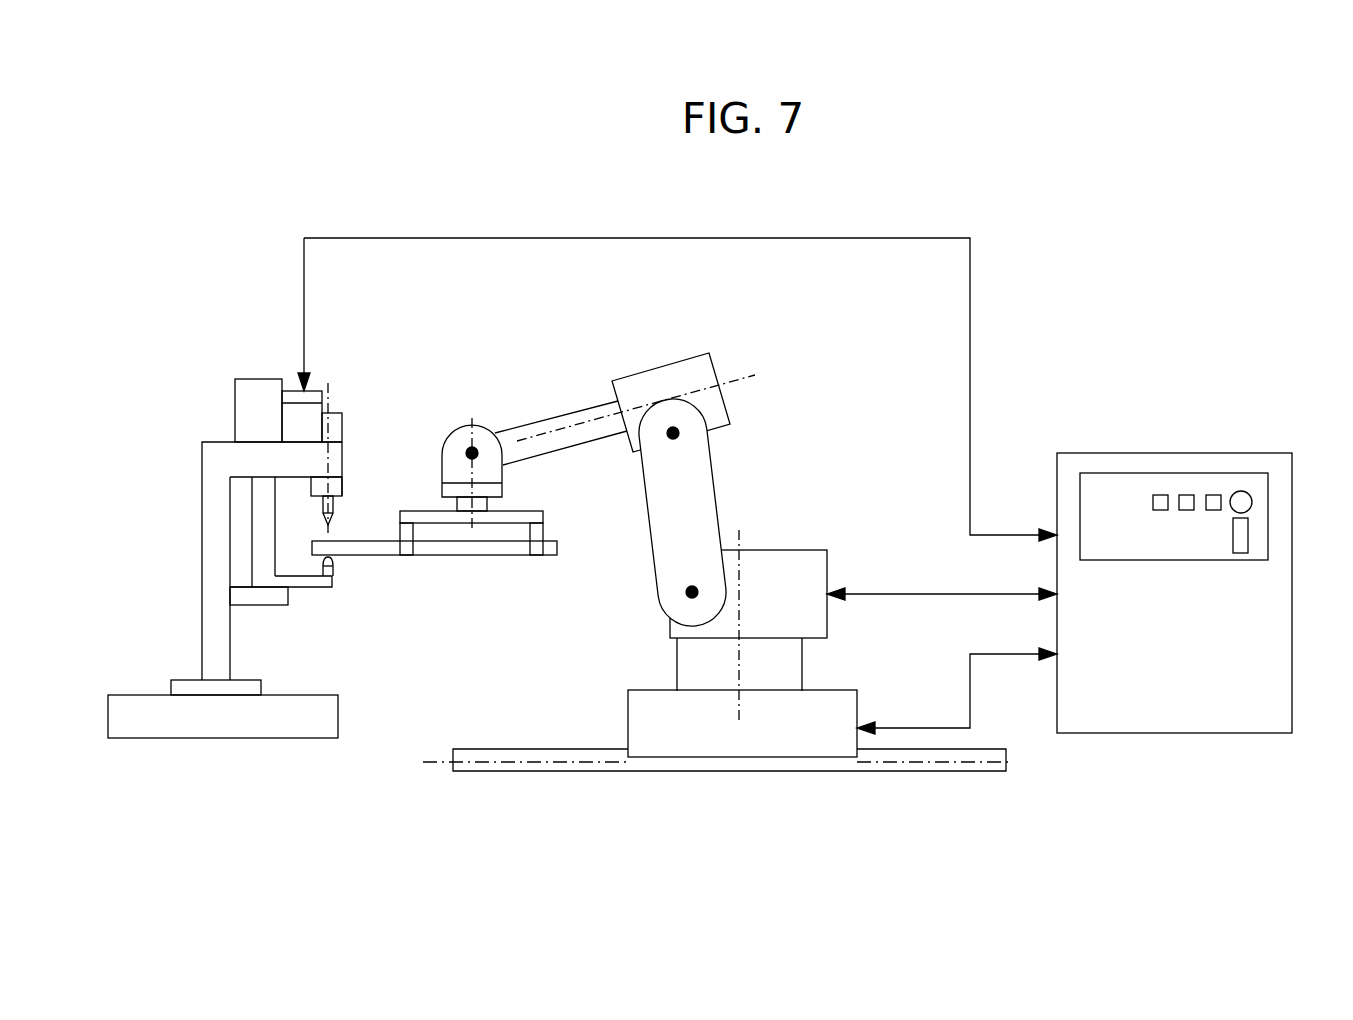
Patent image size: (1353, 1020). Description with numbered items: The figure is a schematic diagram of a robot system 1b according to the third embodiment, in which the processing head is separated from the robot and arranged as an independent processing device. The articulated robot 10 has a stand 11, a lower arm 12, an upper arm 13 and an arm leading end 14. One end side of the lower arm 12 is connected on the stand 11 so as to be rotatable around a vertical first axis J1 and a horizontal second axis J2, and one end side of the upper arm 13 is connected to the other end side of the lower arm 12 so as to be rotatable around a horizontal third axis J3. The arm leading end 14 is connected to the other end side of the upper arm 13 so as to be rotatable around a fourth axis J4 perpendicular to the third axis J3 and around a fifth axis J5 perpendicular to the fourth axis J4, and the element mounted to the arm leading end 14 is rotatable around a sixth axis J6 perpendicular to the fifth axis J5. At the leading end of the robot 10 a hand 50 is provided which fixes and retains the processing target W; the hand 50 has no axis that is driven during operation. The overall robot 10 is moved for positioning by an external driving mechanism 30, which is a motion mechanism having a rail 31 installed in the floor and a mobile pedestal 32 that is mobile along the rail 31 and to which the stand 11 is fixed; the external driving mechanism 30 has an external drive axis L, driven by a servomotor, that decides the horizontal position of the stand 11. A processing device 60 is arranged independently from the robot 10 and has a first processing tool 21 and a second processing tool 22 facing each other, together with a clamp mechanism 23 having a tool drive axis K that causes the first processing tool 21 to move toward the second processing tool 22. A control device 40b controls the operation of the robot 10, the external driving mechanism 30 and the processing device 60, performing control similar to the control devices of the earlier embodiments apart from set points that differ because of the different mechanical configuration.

The robot system 1b is at (1192, 270).
The robot 10 is at (670, 494).
The stand 11 is at (803, 665).
The lower arm 12 is at (650, 556).
The upper arm 13 is at (574, 410).
The arm leading end 14 is at (488, 427).
The first axis J1 is at (740, 572).
The second axis J2 is at (686, 596).
The third axis J3 is at (679, 435).
The fourth axis J4 is at (735, 382).
The fifth axis J5 is at (468, 448).
The sixth axis J6 is at (478, 478).
The first processing tool 21 is at (335, 499).
The second processing tool 22 is at (336, 562).
The clamp mechanism 23 is at (352, 372).
The tool drive axis K is at (331, 390).
The external driving mechanism 30 is at (729, 703).
The rail 31 is at (522, 748).
The mobile pedestal 32 is at (628, 722).
The external drive axis L is at (472, 750).
The control device 40b is at (1177, 453).
The hand 50 is at (543, 513).
The processing device 60 is at (242, 521).
The processing target W is at (462, 557).